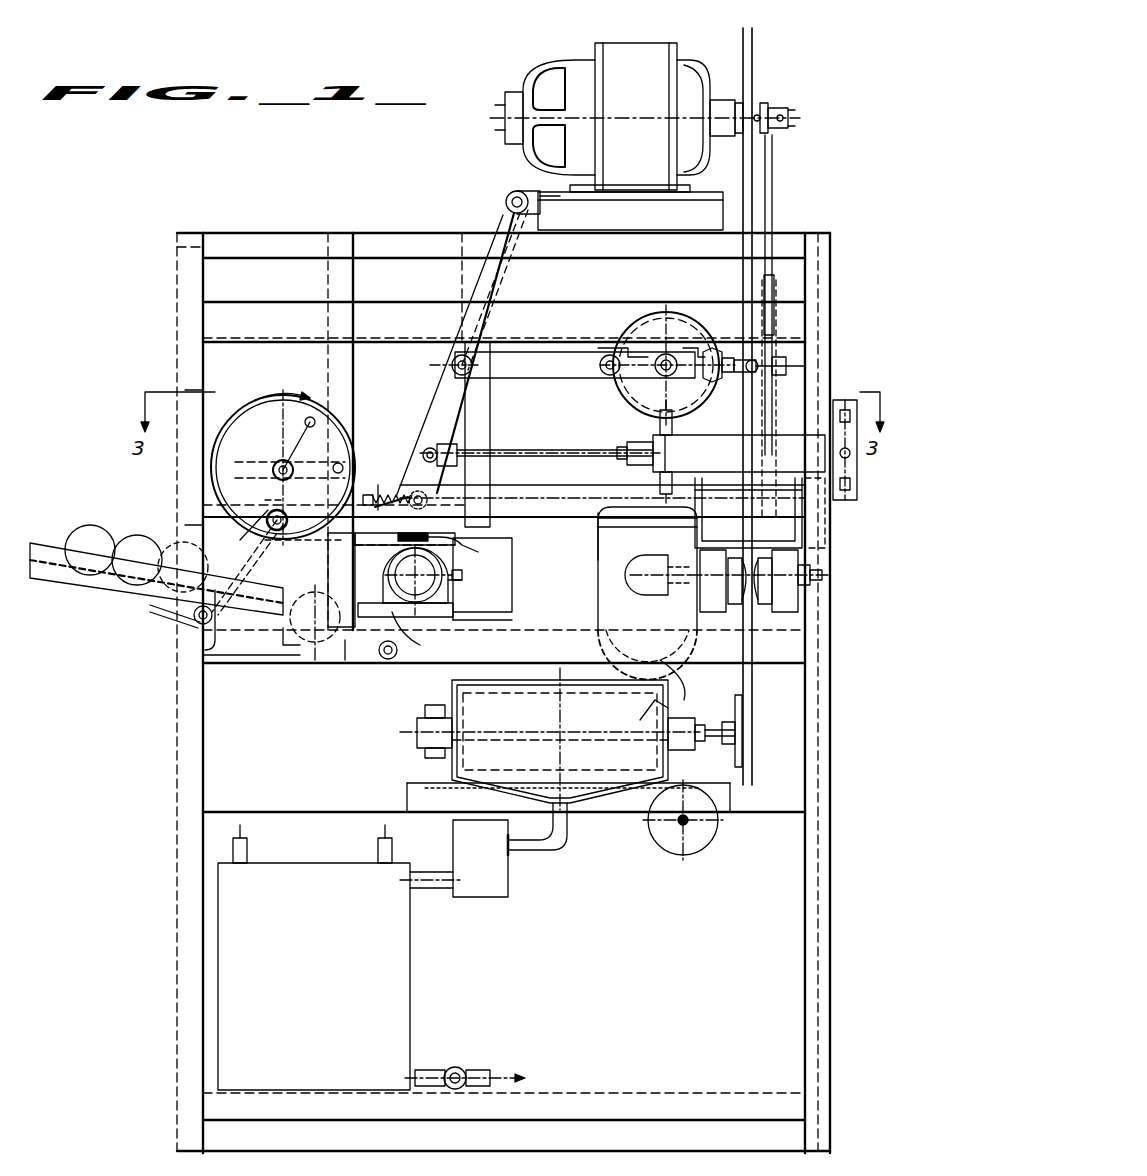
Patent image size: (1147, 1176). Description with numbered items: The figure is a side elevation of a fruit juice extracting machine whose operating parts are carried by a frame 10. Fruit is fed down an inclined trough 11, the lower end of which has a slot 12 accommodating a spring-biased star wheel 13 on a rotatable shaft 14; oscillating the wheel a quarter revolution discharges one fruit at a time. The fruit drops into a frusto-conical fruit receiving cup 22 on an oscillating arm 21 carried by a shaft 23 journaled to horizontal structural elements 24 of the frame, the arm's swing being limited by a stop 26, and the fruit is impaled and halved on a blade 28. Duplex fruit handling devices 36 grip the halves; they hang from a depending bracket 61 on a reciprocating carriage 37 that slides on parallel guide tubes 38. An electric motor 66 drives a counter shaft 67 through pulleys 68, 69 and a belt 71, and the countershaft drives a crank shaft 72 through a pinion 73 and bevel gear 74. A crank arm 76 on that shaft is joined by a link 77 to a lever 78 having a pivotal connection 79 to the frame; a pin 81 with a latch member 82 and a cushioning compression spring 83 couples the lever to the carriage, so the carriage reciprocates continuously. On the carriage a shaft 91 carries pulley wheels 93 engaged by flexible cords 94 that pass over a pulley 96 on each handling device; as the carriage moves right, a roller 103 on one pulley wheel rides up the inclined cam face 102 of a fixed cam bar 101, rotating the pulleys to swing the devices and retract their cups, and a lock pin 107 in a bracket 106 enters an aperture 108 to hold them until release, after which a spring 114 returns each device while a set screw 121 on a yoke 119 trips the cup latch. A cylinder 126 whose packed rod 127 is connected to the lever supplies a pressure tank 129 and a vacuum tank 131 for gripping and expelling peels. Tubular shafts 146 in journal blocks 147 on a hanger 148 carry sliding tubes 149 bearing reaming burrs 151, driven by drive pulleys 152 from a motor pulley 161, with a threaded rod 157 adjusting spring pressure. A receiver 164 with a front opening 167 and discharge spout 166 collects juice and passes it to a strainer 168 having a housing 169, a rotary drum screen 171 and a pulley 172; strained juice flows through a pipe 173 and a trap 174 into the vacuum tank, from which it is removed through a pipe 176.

The frame 10 is at (178, 703).
The inclined trough 11 is at (90, 570).
The slot 12 is at (135, 588).
The star wheel 13 is at (150, 610).
The rotatable shaft 14 is at (190, 625).
The oscillating arm 21 is at (350, 660).
The fruit receiving cup 22 is at (282, 658).
The shaft 23 is at (388, 662).
The horizontal structural elements 24 is at (242, 660).
The stop 26 is at (318, 660).
The blade 28 is at (512, 592).
The fruit handling devices 36 is at (440, 590).
The reciprocating carriage 37 is at (236, 530).
The guide tubes 38 is at (545, 492).
The depending bracket 61 is at (328, 580).
The electric motor 66 is at (630, 72).
The counter shaft 67 is at (750, 372).
The pulley 68 is at (775, 103).
The pulley 69 is at (776, 288).
The belt 71 is at (773, 178).
The crank shaft 72 is at (655, 378).
The pinion 73 is at (712, 348).
The bevel gear 74 is at (676, 312).
The crank arm 76 is at (625, 355).
The link 77 is at (518, 370).
The lever 78 is at (503, 278).
The pivotal connection 79 is at (505, 200).
The pin 81 is at (383, 498).
The latch member 82 is at (368, 488).
The compression spring 83 is at (403, 490).
The shaft 91 is at (275, 465).
The pulley wheels 93 is at (262, 415).
The flexible cords 94 is at (372, 559).
The pulley 96 is at (439, 549).
The cam bar 101 is at (455, 492).
The inclined cam face 102 is at (330, 525).
The roller 103 is at (270, 540).
The bracket 106 is at (310, 428).
The lock pin 107 is at (342, 462).
The aperture 108 is at (292, 428).
The spring 114 is at (424, 636).
The yoke 119 is at (452, 582).
The set screw 121 is at (462, 574).
The cylinder 126 is at (715, 464).
The packed rod 127 is at (490, 455).
The pressure tank 129 is at (680, 850).
The vacuum tank 131 is at (410, 940).
The tubular shafts 146 is at (805, 562).
The journal blocks 147 is at (790, 590).
The hanger 148 is at (800, 535).
The tubes 149 is at (675, 592).
The reaming burrs 151 is at (647, 564).
The drive pulley 152 is at (745, 550).
The threaded rod 157 is at (822, 575).
The pulley 161 is at (752, 52).
The receiver 164 is at (615, 603).
The discharge spout 166 is at (680, 690).
The opening 167 is at (598, 558).
The strainer 168 is at (450, 690).
The housing 169 is at (478, 755).
The rotary drum screen 171 is at (445, 705).
The pulley 172 is at (742, 712).
The pipe 173 is at (567, 830).
The trap 174 is at (500, 880).
The pipe 176 is at (432, 1070).